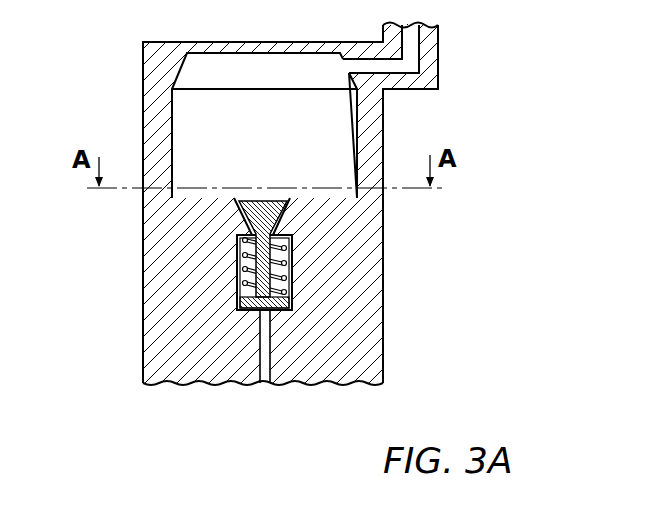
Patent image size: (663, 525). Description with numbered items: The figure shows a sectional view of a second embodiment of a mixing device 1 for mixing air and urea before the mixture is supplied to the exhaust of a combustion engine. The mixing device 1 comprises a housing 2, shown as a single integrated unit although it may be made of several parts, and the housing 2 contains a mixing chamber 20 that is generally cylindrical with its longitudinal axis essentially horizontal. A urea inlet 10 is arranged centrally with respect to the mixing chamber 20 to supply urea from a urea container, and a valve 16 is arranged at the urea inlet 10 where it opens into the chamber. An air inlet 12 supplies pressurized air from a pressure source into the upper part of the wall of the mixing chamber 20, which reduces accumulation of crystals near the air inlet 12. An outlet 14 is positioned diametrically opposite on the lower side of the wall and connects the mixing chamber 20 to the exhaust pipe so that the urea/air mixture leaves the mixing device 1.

The mixing device 1 is at (114, 387).
The housing 2 is at (187, 384).
The urea inlet 10 is at (260, 384).
The air inlet 12 is at (170, 195).
The outlet 14 is at (408, 50).
The valve 16 is at (250, 216).
The mixing chamber 20 is at (190, 98).